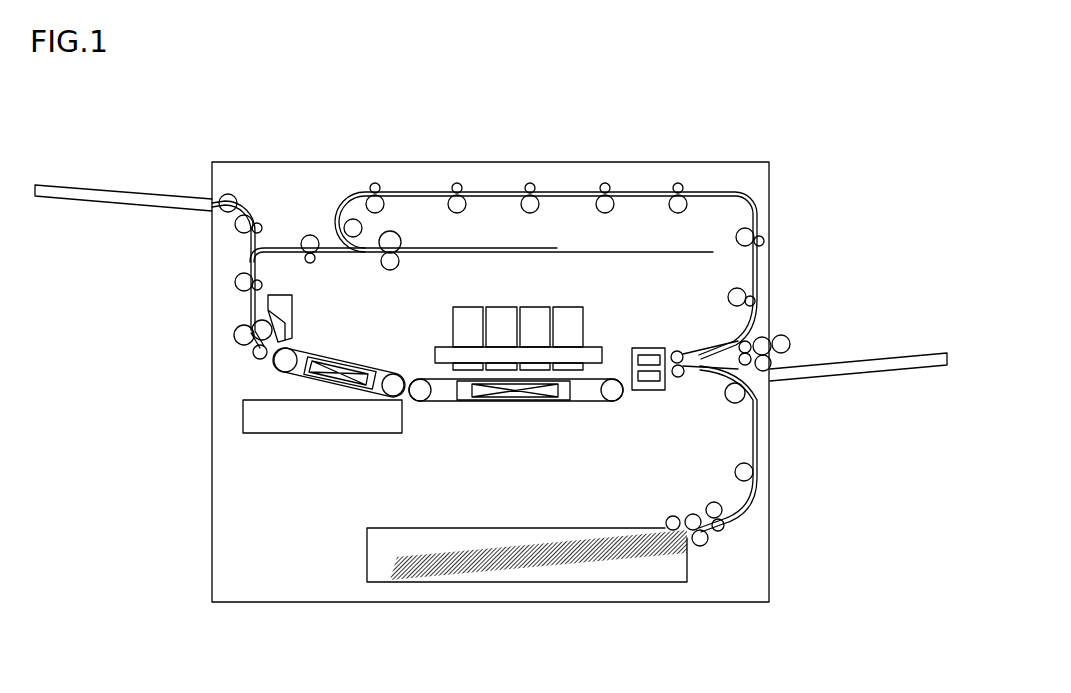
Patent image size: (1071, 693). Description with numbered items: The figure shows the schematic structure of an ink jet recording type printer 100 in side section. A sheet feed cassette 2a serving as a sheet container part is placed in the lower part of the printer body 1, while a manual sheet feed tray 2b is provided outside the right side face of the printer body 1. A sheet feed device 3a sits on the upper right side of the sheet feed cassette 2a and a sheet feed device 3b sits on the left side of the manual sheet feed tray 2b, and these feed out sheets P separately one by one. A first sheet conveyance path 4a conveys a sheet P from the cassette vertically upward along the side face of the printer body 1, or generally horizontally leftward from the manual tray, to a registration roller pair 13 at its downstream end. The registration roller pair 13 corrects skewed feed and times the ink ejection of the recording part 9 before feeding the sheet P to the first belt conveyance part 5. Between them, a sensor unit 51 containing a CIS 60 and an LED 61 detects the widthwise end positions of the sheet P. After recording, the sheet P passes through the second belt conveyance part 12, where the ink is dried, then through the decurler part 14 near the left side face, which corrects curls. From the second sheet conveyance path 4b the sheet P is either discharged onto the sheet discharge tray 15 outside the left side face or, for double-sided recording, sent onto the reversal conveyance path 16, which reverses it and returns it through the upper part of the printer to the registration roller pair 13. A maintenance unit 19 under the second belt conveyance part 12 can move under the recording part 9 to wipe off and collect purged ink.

The printer 100 is at (734, 144).
The printer body 1 is at (773, 199).
The sheet discharge tray 15 is at (150, 195).
The reversal conveyance path 16 is at (343, 222).
The second sheet conveyance path 4b is at (248, 266).
The decurler part 14 is at (256, 358).
The second belt conveyance part 12 is at (339, 353).
The first belt conveyance part 5 is at (520, 406).
The recording part 9 is at (440, 316).
The maintenance unit 19 is at (314, 437).
The CIS 60 is at (648, 348).
The LED 61 is at (646, 392).
The registration roller pair 13 is at (681, 352).
The sensor unit 51 is at (672, 385).
The sheet feed device 3b is at (778, 344).
The manual sheet feed tray 2b is at (868, 362).
The first sheet conveyance path 4a is at (758, 452).
The sheet feed device 3a is at (684, 518).
The sheet feed cassette 2a is at (367, 561).
The sheet P is at (535, 530).